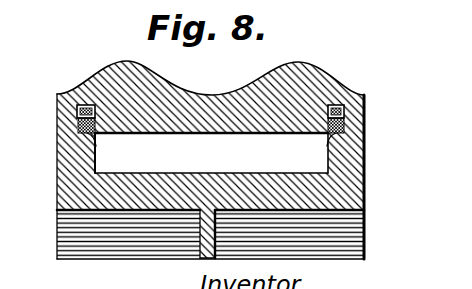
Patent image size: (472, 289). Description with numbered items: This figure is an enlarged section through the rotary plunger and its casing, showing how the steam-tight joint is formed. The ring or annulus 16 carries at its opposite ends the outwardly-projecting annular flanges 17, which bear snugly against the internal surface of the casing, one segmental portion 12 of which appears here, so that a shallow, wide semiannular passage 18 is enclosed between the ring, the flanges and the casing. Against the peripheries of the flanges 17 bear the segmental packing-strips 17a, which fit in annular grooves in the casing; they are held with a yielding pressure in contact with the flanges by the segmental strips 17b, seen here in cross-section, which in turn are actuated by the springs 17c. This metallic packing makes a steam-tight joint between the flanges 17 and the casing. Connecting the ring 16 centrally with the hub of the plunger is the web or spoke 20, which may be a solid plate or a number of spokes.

The segmental portion of the casing 12 is at (213, 100).
The ring or annulus 16 is at (107, 250).
The annular flanges 17 is at (57, 165).
The segmental packing-strips 17a is at (97, 138).
The segmental strip 17b is at (78, 125).
The springs 17c is at (82, 105).
The semiannular passage 18 is at (211, 153).
The web or spoke 20 is at (203, 255).